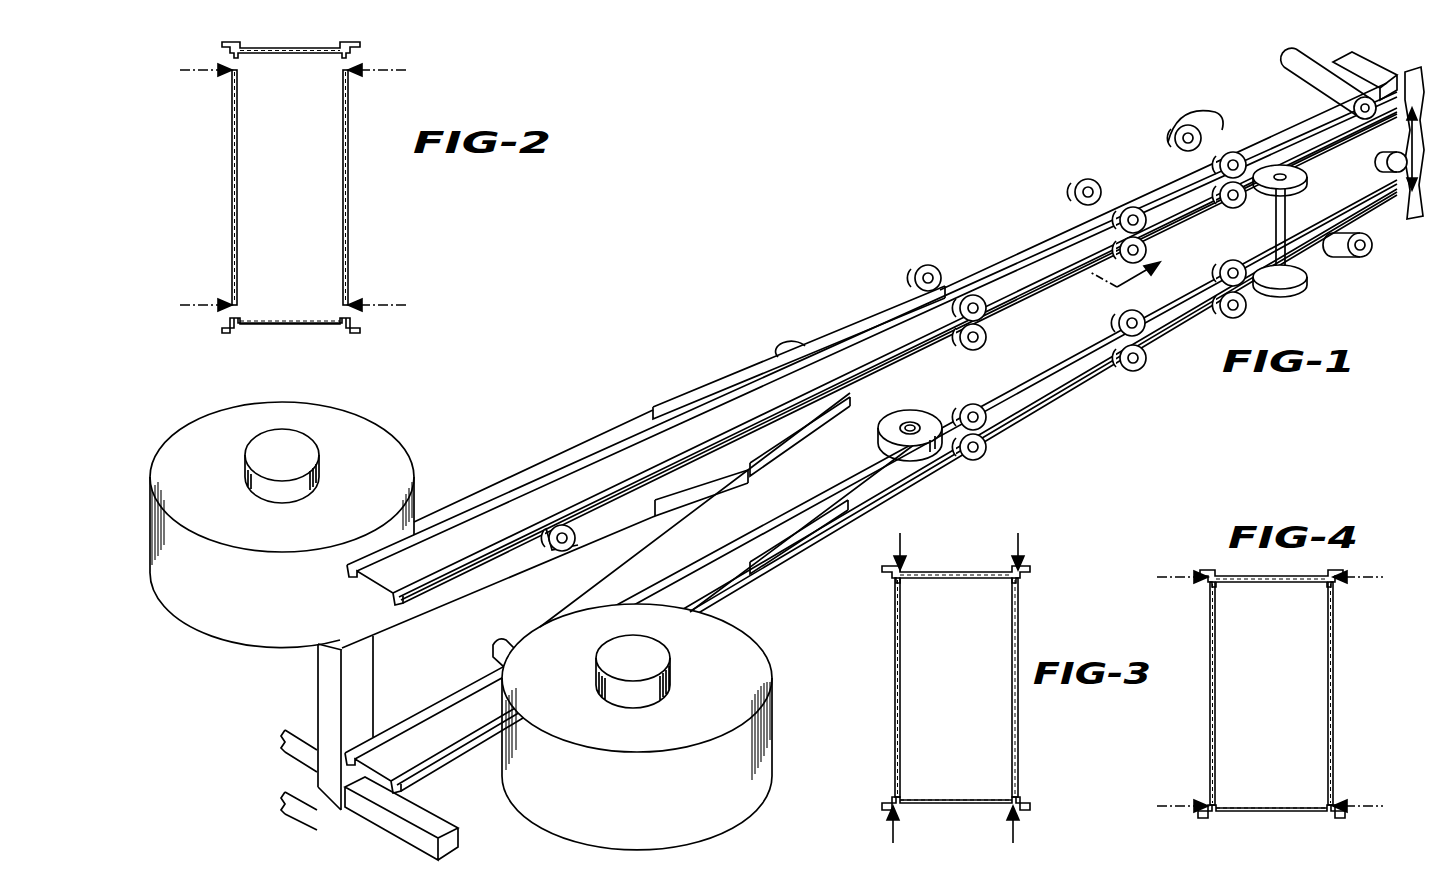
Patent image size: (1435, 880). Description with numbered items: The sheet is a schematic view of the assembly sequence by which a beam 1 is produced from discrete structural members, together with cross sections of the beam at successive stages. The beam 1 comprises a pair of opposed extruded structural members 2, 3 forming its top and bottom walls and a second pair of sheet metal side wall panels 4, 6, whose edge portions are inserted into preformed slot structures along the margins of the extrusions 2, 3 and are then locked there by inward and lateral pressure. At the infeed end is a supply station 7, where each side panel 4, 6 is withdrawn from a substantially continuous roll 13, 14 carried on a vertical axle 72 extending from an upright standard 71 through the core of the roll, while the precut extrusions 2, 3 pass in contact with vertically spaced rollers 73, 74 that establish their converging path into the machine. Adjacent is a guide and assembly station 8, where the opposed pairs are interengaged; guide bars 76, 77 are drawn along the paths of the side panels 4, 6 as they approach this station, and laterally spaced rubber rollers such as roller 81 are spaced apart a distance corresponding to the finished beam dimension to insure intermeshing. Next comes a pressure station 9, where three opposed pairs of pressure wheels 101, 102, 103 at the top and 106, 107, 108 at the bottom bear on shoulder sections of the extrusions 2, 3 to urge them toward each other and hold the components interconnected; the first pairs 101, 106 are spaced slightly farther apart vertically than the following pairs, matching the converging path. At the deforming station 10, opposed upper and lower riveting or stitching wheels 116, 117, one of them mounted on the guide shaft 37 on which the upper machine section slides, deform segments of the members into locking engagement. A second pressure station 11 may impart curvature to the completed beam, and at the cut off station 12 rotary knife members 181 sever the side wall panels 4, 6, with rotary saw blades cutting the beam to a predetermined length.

In FIG. 2, the beam 1 is at (368, 114).
In FIG. 3, the beam 1 is at (1042, 623).
In FIG. 4, the beam 1 is at (1192, 609).
In FIG. 1, the structural member 2 is at (627, 440).
In FIG. 2, the structural member 2 is at (296, 52).
In FIG. 3, the structural member 2 is at (957, 570).
In FIG. 4, the structural member 2 is at (1255, 582).
In FIG. 1, the structural member 3 is at (430, 702).
In FIG. 2, the structural member 3 is at (292, 302).
In FIG. 3, the structural member 3 is at (950, 797).
In FIG. 4, the structural member 3 is at (1250, 805).
In FIG. 1, the side wall panel 4 is at (473, 493).
In FIG. 2, the side wall panel 4 is at (232, 192).
In FIG. 3, the side wall panel 4 is at (895, 688).
In FIG. 4, the side wall panel 4 is at (1210, 720).
In FIG. 1, the side wall panel 6 is at (684, 584).
In FIG. 2, the side wall panel 6 is at (350, 217).
In FIG. 3, the side wall panel 6 is at (1018, 740).
In FIG. 4, the side wall panel 6 is at (1333, 712).
In FIG. 1, the supply station 7 is at (390, 416).
In FIG. 1, the guide and assembly station 8 is at (722, 362).
In FIG. 1, the pressure station 9 is at (938, 254).
In FIG. 1, the deforming station 10 is at (1160, 118).
In FIG. 1, the second pressure station 11 is at (1316, 57).
In FIG. 1, the cut off station 12 is at (1401, 62).
In FIG. 1, the roll 13 is at (333, 412).
In FIG. 1, the roll 14 is at (740, 650).
In FIG. 1, the guide shaft 37 is at (1288, 218).
In FIG. 1, the upright standard 71 is at (368, 673).
In FIG. 1, the vertical axle 72 is at (266, 448).
In FIG. 1, the roller 73 is at (564, 548).
In FIG. 1, the roller 74 is at (493, 644).
In FIG. 1, the upper guide bar 76 is at (684, 398).
In FIG. 1, the lower guide bar 77 is at (655, 520).
In FIG. 1, the rubber roller 81 is at (777, 352).
In FIG. 1, the pressure wheels 101 is at (918, 284).
In FIG. 1, the pressure wheels 102 is at (1091, 174).
In FIG. 1, the pressure wheels 103 is at (1184, 110).
In FIG. 1, the pressure wheels 106 is at (992, 434).
In FIG. 1, the pressure wheels 107 is at (1138, 375).
In FIG. 1, the pressure wheels 108 is at (1217, 320).
In FIG. 1, the upper riveting wheel 116 is at (1262, 194).
In FIG. 1, the lower riveting wheel 117 is at (1288, 289).
In FIG. 1, the rotary knife member 181 is at (1410, 218).